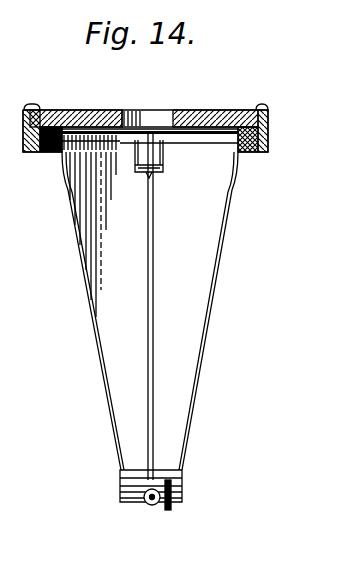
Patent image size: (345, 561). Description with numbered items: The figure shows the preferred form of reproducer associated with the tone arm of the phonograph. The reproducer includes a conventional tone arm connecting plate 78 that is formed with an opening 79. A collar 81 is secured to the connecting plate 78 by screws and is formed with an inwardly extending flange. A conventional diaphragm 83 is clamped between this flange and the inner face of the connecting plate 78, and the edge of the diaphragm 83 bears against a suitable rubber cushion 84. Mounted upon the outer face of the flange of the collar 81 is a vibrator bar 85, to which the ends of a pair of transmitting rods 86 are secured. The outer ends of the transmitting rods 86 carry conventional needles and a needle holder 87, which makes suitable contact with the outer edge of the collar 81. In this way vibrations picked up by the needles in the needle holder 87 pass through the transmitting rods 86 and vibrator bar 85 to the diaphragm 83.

The tone arm connecting plate 78 is at (219, 112).
The opening 79 is at (163, 118).
The collar 81 is at (196, 366).
The diaphragm 83 is at (104, 110).
The rubber cushion 84 is at (268, 133).
The vibrator bar 85 is at (164, 164).
The transmitting rods 86 is at (154, 312).
The needle holder 87 is at (153, 505).